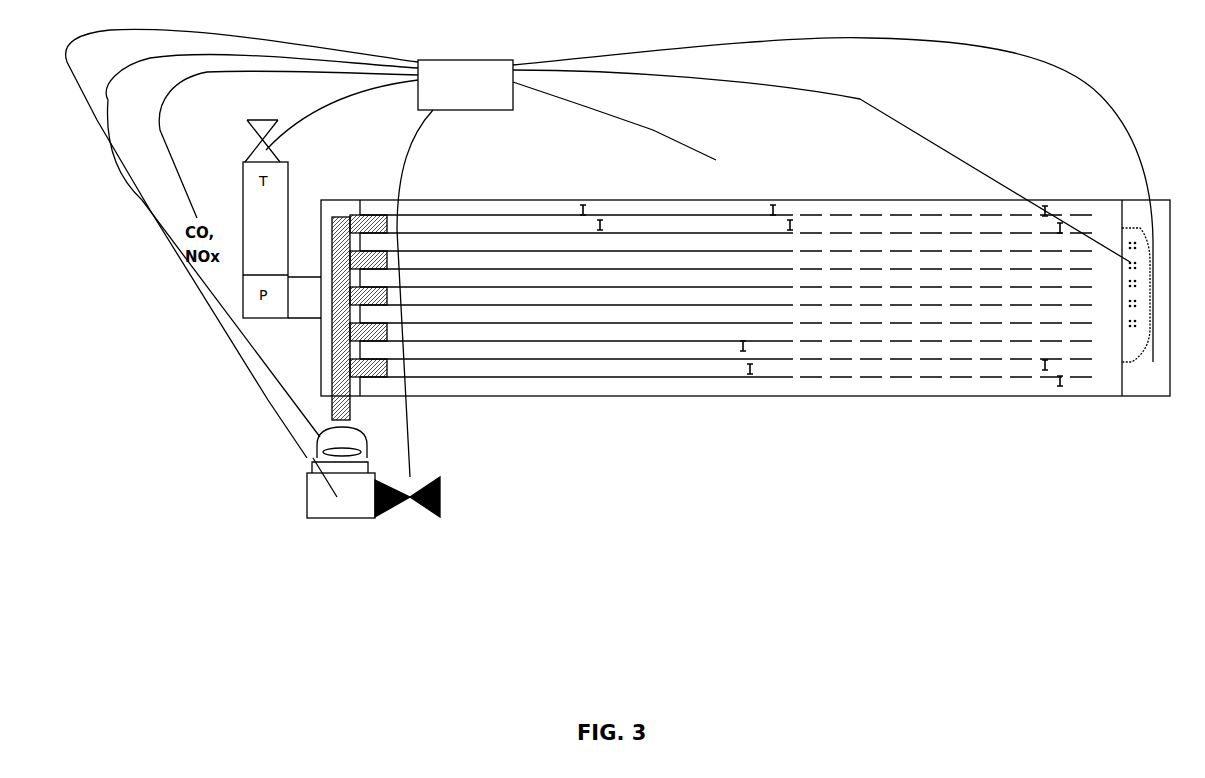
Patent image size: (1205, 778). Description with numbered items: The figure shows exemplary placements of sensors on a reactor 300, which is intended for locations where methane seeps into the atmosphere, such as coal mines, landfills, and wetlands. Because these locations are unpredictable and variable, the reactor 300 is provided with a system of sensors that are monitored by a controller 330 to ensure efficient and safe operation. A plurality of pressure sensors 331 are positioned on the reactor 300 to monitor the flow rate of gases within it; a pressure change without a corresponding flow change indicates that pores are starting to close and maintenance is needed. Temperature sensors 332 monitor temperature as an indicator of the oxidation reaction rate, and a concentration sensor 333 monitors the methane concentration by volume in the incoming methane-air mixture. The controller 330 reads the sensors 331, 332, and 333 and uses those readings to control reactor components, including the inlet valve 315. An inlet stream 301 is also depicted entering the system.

The reactor 300 is at (908, 159).
The exhaust gas inlet 301 is at (313, 457).
The inlet valve 315 is at (313, 500).
The controller 330 is at (488, 99).
The pressure sensors 331 is at (1153, 370).
The temperature sensors 332 is at (288, 172).
The concentration sensor 333 is at (356, 437).